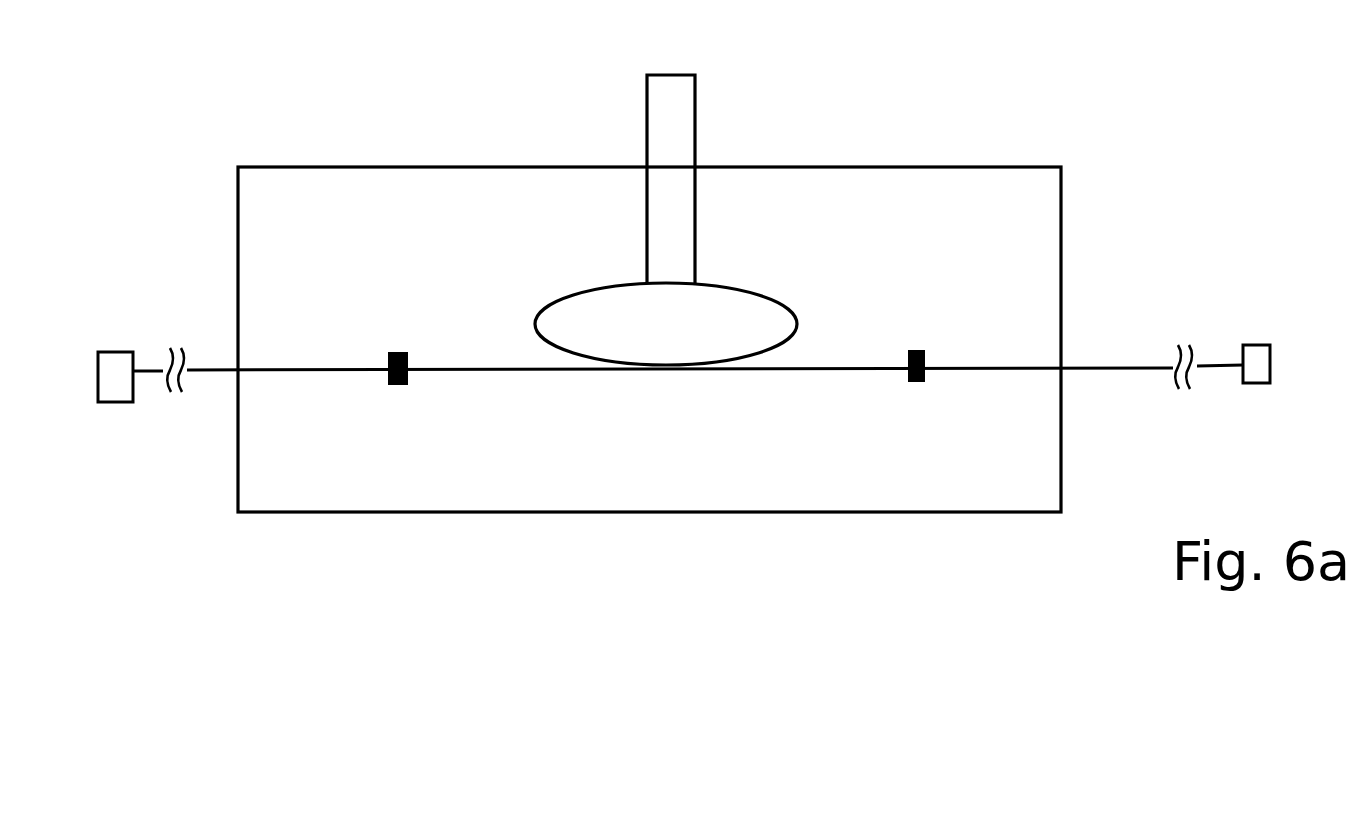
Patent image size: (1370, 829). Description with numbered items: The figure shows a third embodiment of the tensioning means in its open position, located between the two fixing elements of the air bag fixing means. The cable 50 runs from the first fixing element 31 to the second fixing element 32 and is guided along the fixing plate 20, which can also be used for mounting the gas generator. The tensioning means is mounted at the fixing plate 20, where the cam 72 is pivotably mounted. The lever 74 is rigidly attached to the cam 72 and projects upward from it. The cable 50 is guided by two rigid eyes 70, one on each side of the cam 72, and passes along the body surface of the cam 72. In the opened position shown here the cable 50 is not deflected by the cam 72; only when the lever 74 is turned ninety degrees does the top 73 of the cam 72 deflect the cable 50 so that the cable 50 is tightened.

The fixing plate 20 is at (982, 499).
The cable 50 is at (1098, 365).
The rigid eyes 70 is at (397, 385).
The cam 72 is at (692, 339).
The top of the cam 73 is at (800, 318).
The lever 74 is at (685, 122).
The first fixing element 31 is at (1264, 362).
The second fixing element 32 is at (115, 392).